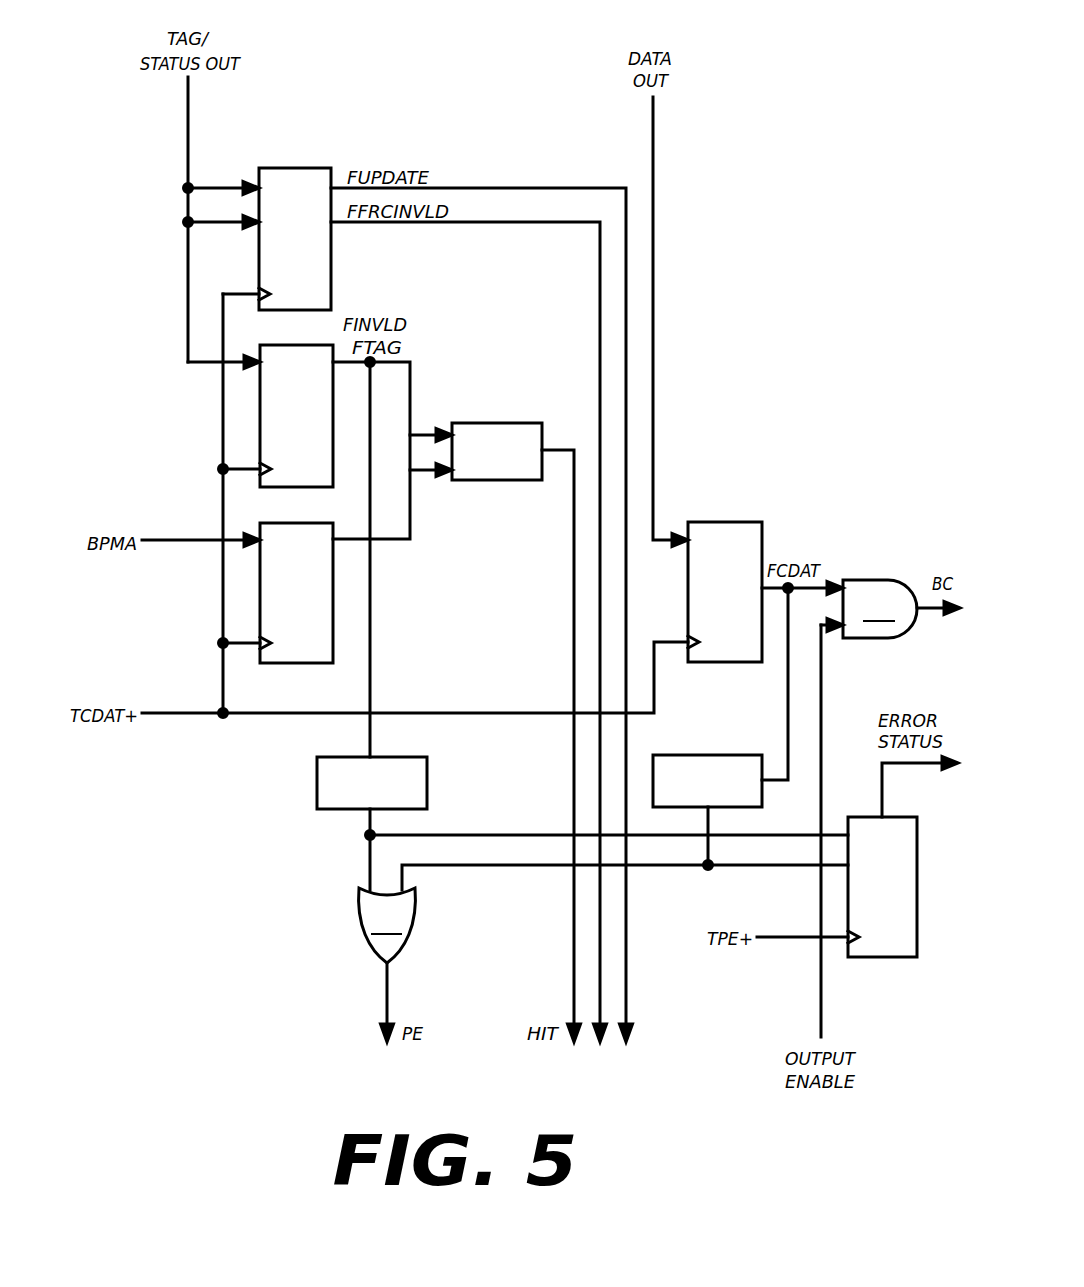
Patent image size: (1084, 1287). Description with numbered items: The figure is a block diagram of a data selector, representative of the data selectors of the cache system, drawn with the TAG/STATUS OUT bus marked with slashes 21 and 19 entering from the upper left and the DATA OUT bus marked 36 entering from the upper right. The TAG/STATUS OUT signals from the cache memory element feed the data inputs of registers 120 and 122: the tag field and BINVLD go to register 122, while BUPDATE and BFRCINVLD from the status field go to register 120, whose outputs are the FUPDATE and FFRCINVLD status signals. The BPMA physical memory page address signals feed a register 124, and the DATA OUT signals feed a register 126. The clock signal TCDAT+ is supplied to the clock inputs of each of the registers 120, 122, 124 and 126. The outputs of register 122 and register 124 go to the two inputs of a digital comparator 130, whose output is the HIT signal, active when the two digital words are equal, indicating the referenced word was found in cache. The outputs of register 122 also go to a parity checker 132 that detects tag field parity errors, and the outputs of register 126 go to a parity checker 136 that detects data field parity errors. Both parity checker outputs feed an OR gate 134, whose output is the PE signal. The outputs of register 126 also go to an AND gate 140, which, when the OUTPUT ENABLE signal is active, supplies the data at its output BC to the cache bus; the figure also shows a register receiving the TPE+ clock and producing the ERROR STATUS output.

The tag/status out bus 21 is at (192, 118).
The status bus 19 is at (192, 258).
The data out bus 36 is at (648, 133).
The register 120 is at (293, 168).
The register 122 is at (277, 345).
The register 124 is at (278, 523).
The register 126 is at (724, 522).
The digital comparator 130 is at (492, 423).
The parity checker 132 is at (336, 757).
The OR gate 134 is at (387, 965).
The parity checker 136 is at (691, 755).
The AND gate 140 is at (890, 609).